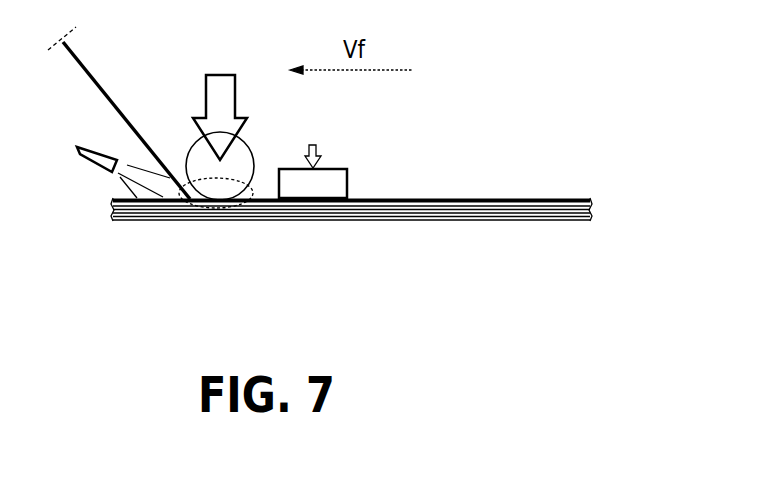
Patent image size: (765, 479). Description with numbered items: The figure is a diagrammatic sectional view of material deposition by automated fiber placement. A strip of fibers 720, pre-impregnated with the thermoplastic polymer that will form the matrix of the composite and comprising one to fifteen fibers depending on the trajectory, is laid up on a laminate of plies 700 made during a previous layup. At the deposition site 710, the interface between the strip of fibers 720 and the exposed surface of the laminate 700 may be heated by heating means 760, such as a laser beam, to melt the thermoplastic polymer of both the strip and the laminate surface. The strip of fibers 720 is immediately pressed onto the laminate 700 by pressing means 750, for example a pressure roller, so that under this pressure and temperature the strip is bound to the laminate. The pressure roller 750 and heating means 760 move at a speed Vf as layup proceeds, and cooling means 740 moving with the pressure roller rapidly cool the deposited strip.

The laminate of plies 700 is at (570, 222).
The deposition site 710 is at (229, 199).
The strip of fibers 720 is at (97, 78).
The cooling means 740 is at (347, 182).
The pressing means 750 is at (248, 144).
The heating means 760 is at (91, 161).